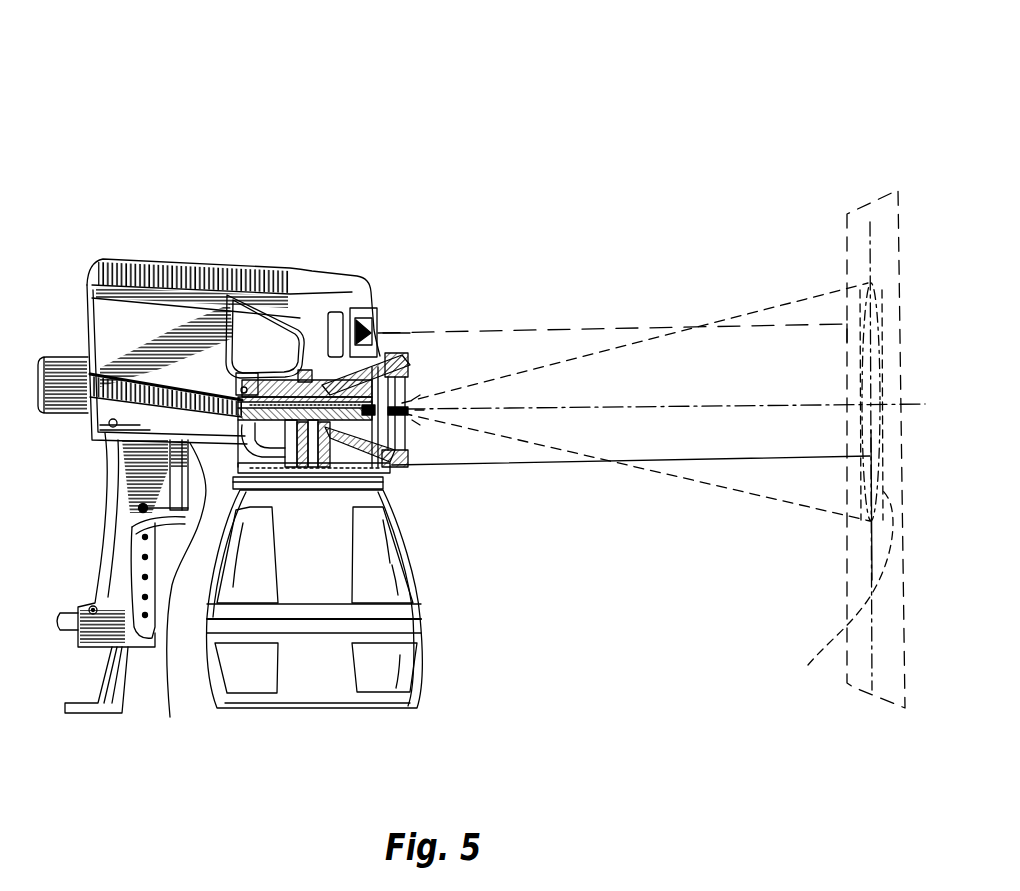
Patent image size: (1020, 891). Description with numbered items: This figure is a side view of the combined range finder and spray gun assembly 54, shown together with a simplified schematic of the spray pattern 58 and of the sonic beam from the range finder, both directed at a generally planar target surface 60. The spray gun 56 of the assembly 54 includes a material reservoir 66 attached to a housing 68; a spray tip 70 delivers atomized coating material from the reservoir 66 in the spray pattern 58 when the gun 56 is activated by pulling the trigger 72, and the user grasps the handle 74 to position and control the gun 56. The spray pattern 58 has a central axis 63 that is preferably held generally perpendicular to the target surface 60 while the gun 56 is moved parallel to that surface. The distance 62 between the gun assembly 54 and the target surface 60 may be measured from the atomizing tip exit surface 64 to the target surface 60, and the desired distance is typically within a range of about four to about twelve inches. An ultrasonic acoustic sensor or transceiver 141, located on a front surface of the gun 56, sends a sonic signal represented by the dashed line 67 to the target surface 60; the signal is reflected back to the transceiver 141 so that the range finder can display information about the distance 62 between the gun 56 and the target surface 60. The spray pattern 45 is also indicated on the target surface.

The gun assembly 54 is at (238, 112).
The ultrasonic acoustic sensor or transceiver 141 is at (378, 358).
The spray tip 70 is at (380, 338).
The atomizing tip exit surface 64 is at (407, 378).
The housing 68 is at (290, 268).
The dashed line 67 is at (567, 327).
The target surface 60 is at (845, 226).
The central axis 63 is at (595, 412).
The distance 62 is at (545, 465).
The handle 74 is at (98, 544).
The spray pattern 45 is at (873, 558).
The spray gun 56 is at (470, 608).
The material reservoir 66 is at (363, 708).
The spray pattern 58 is at (808, 665).
The trigger 72 is at (168, 700).